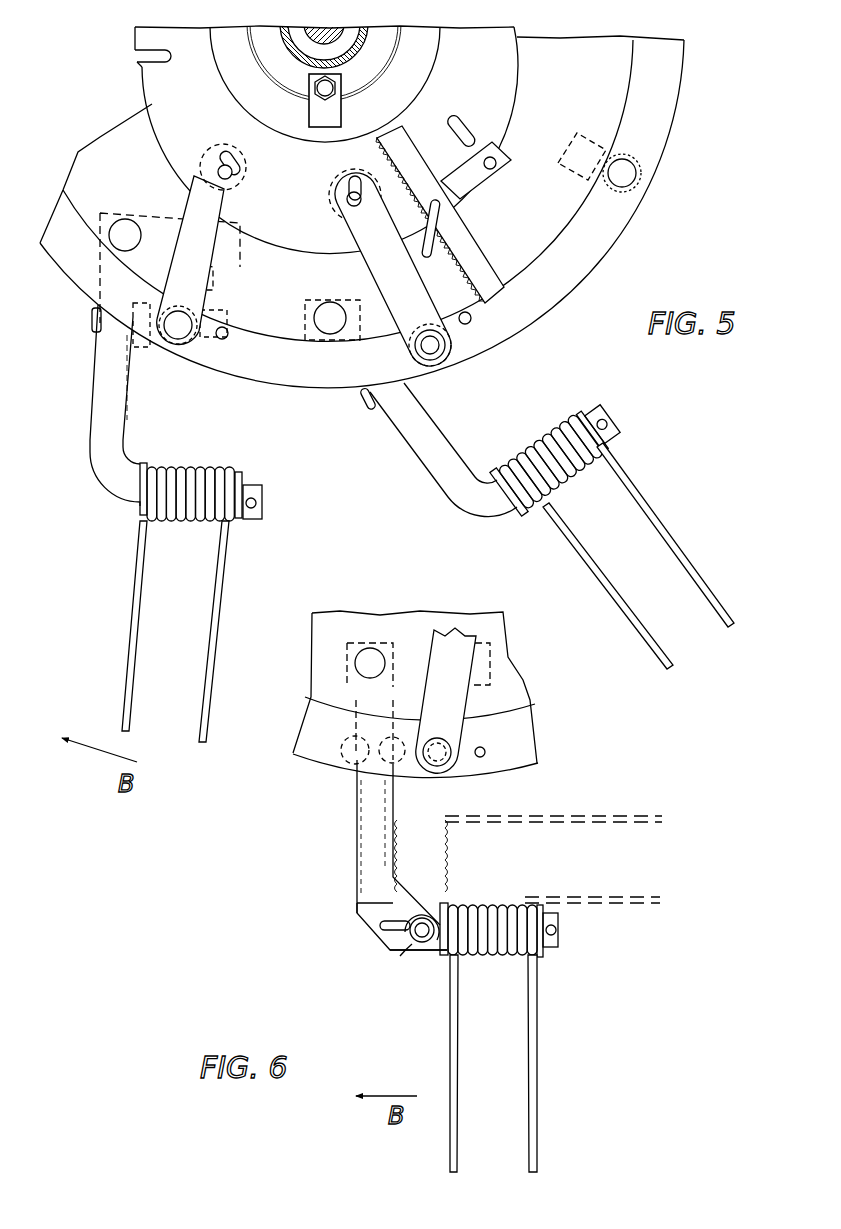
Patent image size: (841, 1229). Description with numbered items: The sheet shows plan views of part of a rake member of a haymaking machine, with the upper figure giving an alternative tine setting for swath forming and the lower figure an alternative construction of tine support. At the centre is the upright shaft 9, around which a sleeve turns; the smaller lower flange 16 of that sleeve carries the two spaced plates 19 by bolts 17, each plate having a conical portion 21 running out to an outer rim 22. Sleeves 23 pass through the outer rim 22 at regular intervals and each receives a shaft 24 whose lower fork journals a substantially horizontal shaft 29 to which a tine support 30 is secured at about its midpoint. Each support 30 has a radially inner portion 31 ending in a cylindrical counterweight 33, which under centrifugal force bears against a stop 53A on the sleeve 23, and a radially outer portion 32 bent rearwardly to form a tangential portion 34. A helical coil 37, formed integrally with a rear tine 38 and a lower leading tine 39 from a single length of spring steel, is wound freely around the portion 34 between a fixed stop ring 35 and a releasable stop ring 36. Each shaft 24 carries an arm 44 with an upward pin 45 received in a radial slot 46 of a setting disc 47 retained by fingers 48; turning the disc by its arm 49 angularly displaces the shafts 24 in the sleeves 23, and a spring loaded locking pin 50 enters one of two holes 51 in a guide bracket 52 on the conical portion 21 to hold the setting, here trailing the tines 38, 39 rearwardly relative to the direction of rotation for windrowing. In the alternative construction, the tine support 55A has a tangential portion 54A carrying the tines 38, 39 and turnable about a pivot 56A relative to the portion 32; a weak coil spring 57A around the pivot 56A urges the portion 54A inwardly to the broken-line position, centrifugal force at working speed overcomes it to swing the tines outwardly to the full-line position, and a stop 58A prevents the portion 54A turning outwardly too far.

In FIG. 5, the shaft 9 is at (300, 38).
In FIG. 5, the flange 16 is at (398, 54).
In FIG. 5, the bolts 17 is at (342, 82).
In FIG. 6, the plates 19 is at (376, 611).
In FIG. 6, the conical portion 21 is at (527, 689).
In FIG. 5, the outer rim 22 is at (608, 246).
In FIG. 6, the outer rim 22 is at (530, 729).
In FIG. 5, the sleeve 23 is at (640, 186).
In FIG. 5, the shaft 24 is at (440, 360).
In FIG. 5, the horizontal shaft 29 is at (226, 338).
In FIG. 6, the horizontal shaft 29 is at (487, 753).
In FIG. 5, the tine support 30 is at (125, 420).
In FIG. 6, the support portion 31 is at (353, 688).
In FIG. 6, the support portion 32 is at (355, 796).
In FIG. 5, the counterweight 33 is at (240, 244).
In FIG. 6, the counterweight 33 is at (492, 663).
In FIG. 5, the support portion 34 is at (262, 501).
In FIG. 6, the stop ring 35 is at (467, 915).
In FIG. 6, the stop ring 36 is at (543, 955).
In FIG. 5, the helical coil 37 is at (186, 522).
In FIG. 6, the helical coil 37 is at (496, 972).
In FIG. 5, the tine 38 is at (219, 622).
In FIG. 6, the tine 38 is at (609, 818).
In FIG. 5, the tine 39 is at (131, 625).
In FIG. 6, the tine 39 is at (603, 897).
In FIG. 5, the arm 44 is at (193, 190).
In FIG. 6, the arm 44 is at (480, 633).
In FIG. 5, the pin 45 is at (323, 193).
In FIG. 5, the radial slot 46 is at (134, 56).
In FIG. 5, the setting disc 47 is at (505, 69).
In FIG. 5, the finger 48 is at (342, 113).
In FIG. 5, the arm 49 is at (480, 251).
In FIG. 5, the locking pin 50 is at (449, 207).
In FIG. 5, the hole 51 is at (495, 165).
In FIG. 5, the guide bracket 52 is at (484, 186).
In FIG. 5, the stop 53A is at (220, 287).
In FIG. 6, the tine support portion 54A is at (559, 938).
In FIG. 6, the tine support 55A is at (355, 841).
In FIG. 6, the pivot 56A is at (414, 944).
In FIG. 6, the coil spring 57A is at (380, 928).
In FIG. 6, the stop 58A is at (435, 957).